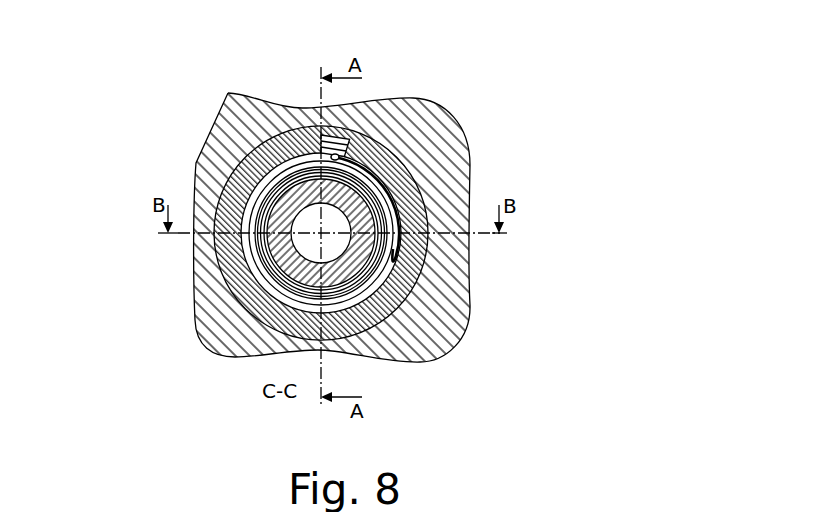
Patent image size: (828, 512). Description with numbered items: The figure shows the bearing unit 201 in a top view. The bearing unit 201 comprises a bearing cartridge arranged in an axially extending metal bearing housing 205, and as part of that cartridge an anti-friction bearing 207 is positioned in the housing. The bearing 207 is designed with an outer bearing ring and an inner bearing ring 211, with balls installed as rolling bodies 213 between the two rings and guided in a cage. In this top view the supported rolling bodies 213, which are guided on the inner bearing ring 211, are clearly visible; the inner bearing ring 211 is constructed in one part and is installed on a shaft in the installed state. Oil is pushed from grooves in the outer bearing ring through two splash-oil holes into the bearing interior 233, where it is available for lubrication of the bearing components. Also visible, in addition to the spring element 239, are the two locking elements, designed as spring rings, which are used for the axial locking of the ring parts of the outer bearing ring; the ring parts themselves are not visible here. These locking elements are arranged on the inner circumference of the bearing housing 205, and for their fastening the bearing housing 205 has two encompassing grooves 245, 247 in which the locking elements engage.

The bearing unit 201 is at (356, 219).
The bearing housing 205 is at (408, 118).
The anti-friction bearing 207 is at (278, 192).
The inner bearing ring 211 is at (278, 280).
The rolling bodies 213 is at (233, 250).
The bearing interior 233 is at (372, 290).
The spring element 239 is at (470, 278).
The encompassing groove 245 is at (416, 178).
The encompassing groove 247 is at (335, 157).